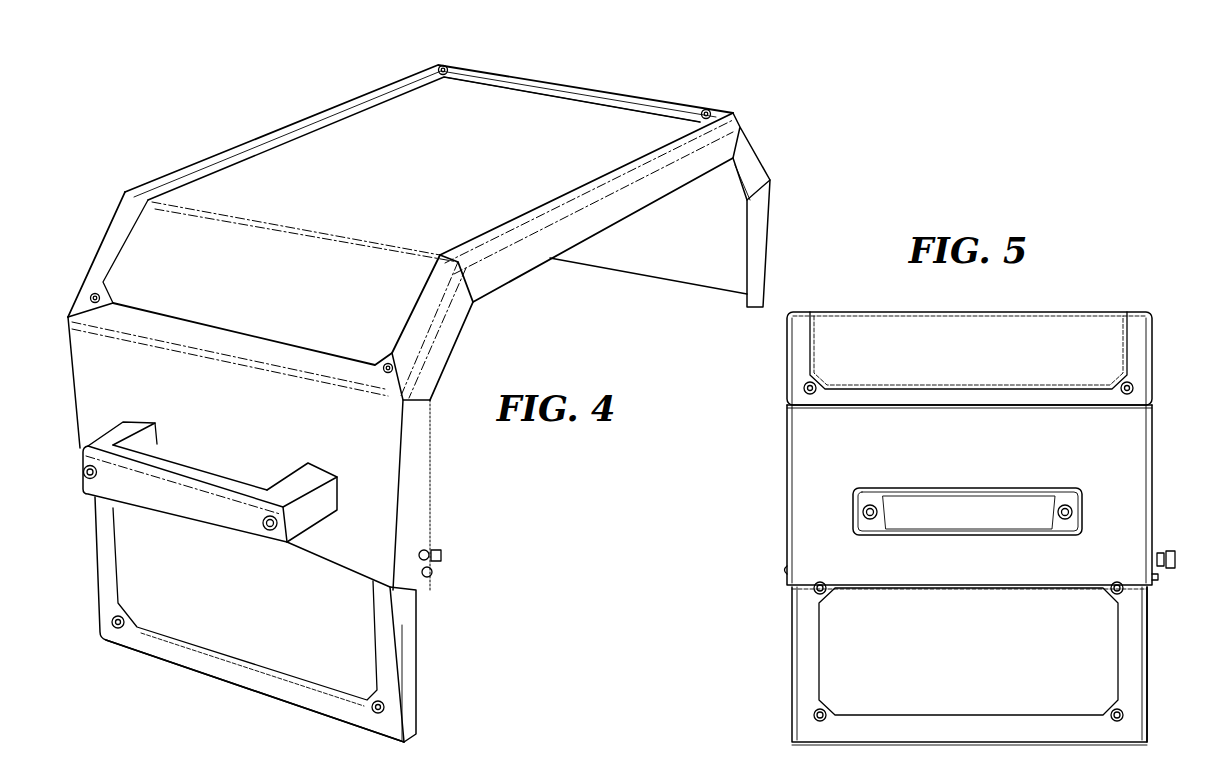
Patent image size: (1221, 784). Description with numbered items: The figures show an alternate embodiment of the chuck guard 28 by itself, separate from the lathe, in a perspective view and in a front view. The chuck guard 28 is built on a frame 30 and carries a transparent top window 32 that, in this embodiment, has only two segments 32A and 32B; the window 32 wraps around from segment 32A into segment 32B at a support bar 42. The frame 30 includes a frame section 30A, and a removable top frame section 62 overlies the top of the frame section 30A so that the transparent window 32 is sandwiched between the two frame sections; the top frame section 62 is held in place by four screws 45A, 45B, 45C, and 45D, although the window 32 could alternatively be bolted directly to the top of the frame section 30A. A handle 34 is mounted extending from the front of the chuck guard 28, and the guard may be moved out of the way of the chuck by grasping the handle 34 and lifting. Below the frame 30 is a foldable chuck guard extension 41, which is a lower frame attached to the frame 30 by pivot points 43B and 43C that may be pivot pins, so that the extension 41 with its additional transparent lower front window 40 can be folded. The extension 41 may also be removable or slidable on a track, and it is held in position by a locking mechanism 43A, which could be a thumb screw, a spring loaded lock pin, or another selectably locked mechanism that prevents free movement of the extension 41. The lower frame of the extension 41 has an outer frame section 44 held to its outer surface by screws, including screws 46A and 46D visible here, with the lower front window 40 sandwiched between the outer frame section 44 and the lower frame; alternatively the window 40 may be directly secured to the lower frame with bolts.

In FIG. 4, the chuck guard 28 is at (231, 151).
In FIG. 5, the chuck guard 28 is at (1155, 497).
In FIG. 4, the frame 30 is at (712, 148).
In FIG. 4, the frame section 30A is at (527, 255).
In FIG. 4, the top window 32 is at (393, 111).
In FIG. 4, the first window segment 32A is at (303, 167).
In FIG. 4, the second window segment 32B is at (155, 247).
In FIG. 4, the handle 34 is at (308, 508).
In FIG. 4, the lower front window 40 is at (307, 621).
In FIG. 5, the lower front window 40 is at (1043, 687).
In FIG. 4, the chuck guard extension 41 is at (251, 690).
In FIG. 5, the chuck guard extension 41 is at (1151, 692).
In FIG. 4, the support bar 42 is at (318, 236).
In FIG. 4, the locking mechanism 43A is at (443, 556).
In FIG. 5, the locking mechanism 43A is at (1171, 552).
In FIG. 4, the pivot point 43B is at (433, 575).
In FIG. 5, the pivot point 43B is at (1156, 578).
In FIG. 5, the pivot point 43C is at (785, 570).
In FIG. 4, the outer frame section 44 is at (396, 615).
In FIG. 4, the screw 45A is at (95, 293).
In FIG. 4, the screw 45B is at (384, 362).
In FIG. 4, the screw 45C is at (710, 111).
In FIG. 4, the screw 45D is at (448, 68).
In FIG. 4, the screw 46A is at (118, 630).
In FIG. 4, the screw 46D is at (378, 715).
In FIG. 4, the top frame section 62 is at (585, 91).